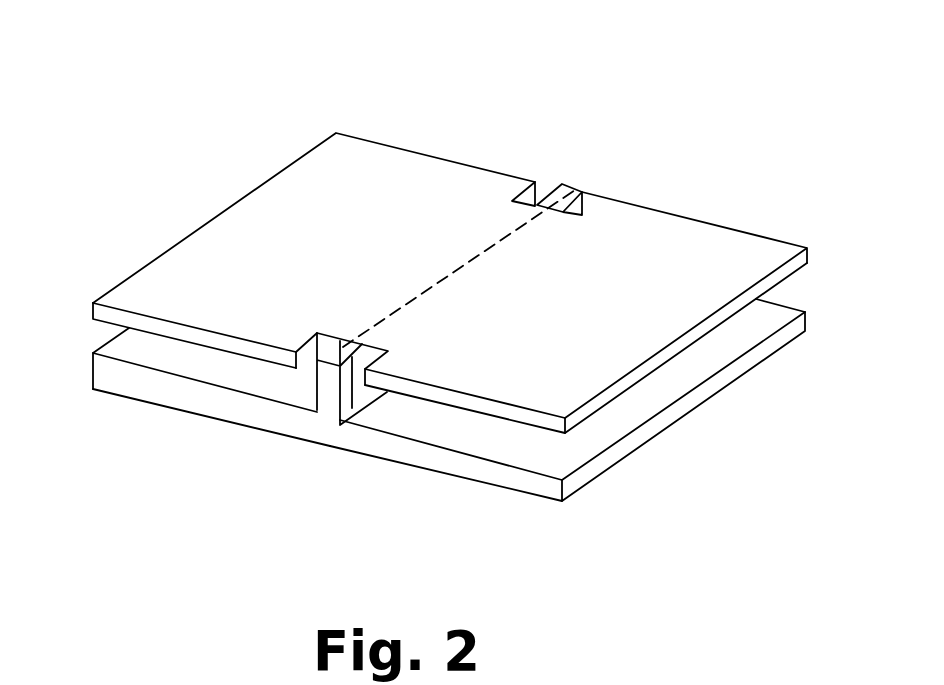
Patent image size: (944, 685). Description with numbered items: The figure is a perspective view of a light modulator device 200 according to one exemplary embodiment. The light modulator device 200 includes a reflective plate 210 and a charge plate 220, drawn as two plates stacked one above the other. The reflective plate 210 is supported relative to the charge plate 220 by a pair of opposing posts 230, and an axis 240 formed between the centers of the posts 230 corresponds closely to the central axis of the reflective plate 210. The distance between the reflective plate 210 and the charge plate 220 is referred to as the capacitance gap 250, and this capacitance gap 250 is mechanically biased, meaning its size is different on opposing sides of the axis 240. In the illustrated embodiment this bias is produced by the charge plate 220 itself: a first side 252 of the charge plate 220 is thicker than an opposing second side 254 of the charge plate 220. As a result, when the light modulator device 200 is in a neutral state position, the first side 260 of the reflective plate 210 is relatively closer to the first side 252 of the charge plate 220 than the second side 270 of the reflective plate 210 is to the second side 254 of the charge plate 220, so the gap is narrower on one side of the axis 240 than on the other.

The light modulator device 200 is at (148, 86).
The reflective plate 210 is at (450, 216).
The charge plate 220 is at (300, 447).
The posts 230 is at (561, 186).
The axis 240 is at (567, 203).
The capacitance gap 250 is at (615, 424).
The first side of the charge plate 252 is at (197, 393).
The second side of the charge plate 254 is at (458, 464).
The first side of the reflective plate 260 is at (418, 148).
The second side of the reflective plate 270 is at (681, 216).